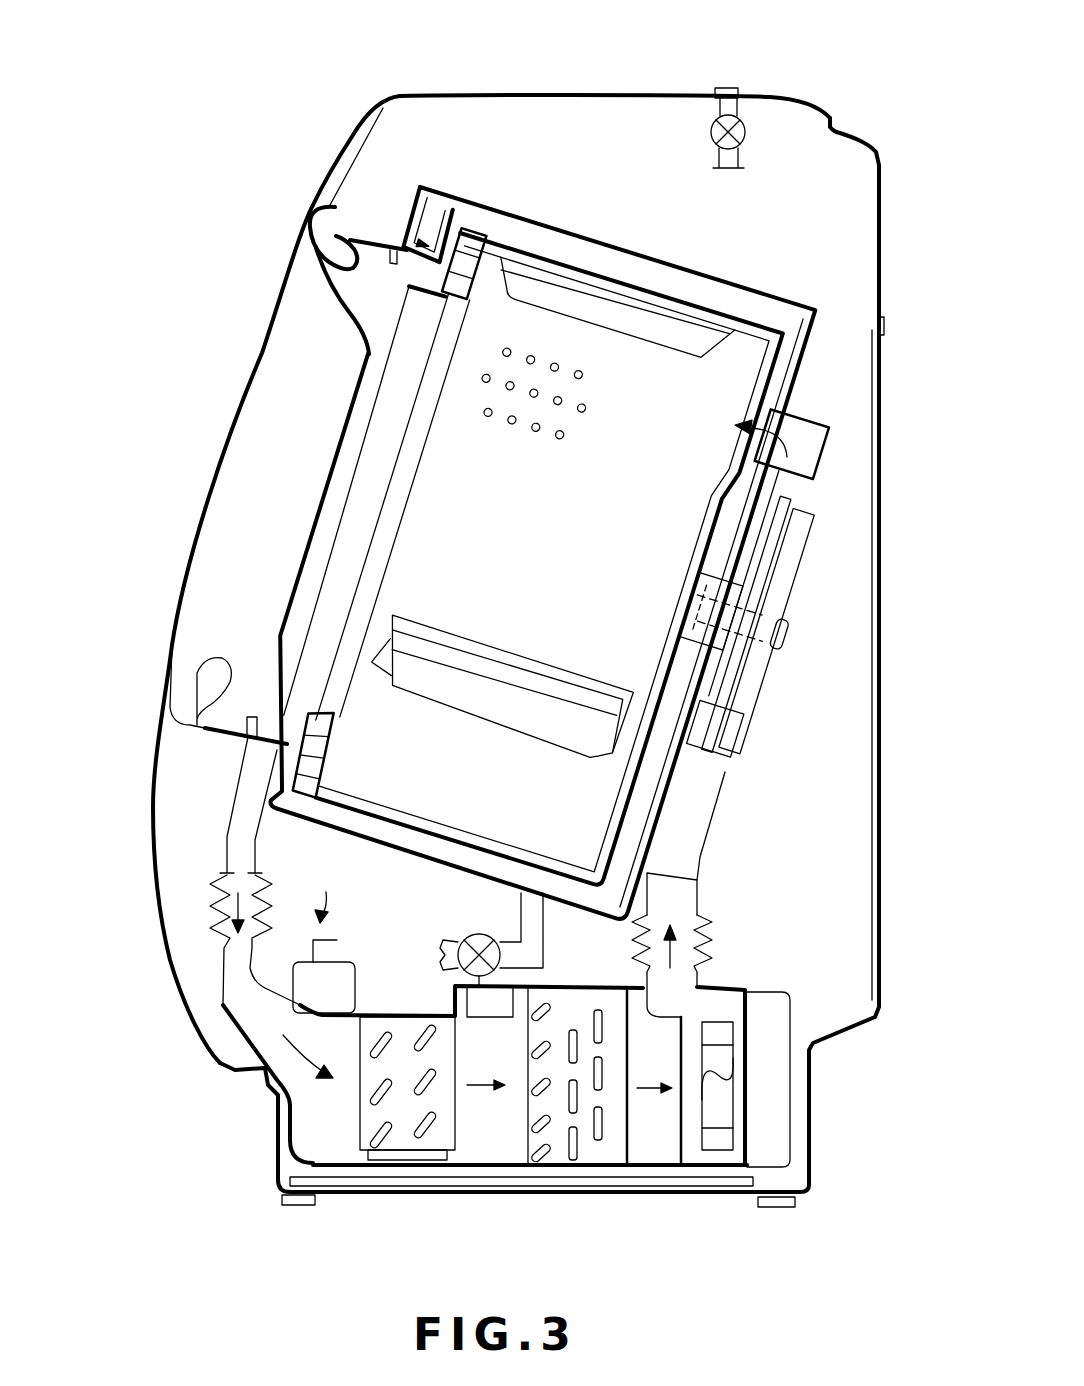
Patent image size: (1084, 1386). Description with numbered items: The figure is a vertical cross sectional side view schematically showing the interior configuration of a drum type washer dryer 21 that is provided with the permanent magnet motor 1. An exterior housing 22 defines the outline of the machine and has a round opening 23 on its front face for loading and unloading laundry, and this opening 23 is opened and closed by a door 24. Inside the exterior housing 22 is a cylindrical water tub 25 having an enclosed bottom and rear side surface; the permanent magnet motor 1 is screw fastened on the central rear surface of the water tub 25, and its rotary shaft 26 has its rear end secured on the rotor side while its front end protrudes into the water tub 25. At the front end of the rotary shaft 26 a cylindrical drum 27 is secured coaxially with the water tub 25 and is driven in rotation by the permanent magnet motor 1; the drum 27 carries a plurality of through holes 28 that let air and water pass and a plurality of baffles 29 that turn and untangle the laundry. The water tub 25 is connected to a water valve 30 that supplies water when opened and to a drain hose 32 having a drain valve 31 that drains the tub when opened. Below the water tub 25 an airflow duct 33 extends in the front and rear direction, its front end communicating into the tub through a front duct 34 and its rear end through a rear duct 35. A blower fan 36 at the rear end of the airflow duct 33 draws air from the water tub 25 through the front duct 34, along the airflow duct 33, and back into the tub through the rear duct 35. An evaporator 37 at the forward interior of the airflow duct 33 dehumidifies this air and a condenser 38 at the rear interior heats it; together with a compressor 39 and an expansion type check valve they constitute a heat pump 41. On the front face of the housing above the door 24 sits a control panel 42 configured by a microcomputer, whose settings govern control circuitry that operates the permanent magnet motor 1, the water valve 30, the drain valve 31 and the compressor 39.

The permanent magnet motor 1 is at (815, 522).
The drum type washer dryer 21 is at (545, 66).
The exterior housing 22 is at (153, 805).
The opening 23 is at (315, 248).
The door 24 is at (248, 392).
The water tub 25 is at (757, 287).
The rotary shaft 26 is at (717, 575).
The drum 27 is at (645, 290).
The through holes 28 is at (537, 440).
The baffles 29 is at (515, 735).
The water valve 30 is at (748, 130).
The drain valve 31 is at (478, 934).
The drain hose 32 is at (442, 940).
The airflow duct 33 is at (471, 1165).
The front duct 34 is at (235, 792).
The rear duct 35 is at (713, 815).
The blower fan 36 is at (790, 1107).
The evaporator 37 is at (401, 1140).
The condenser 38 is at (588, 1150).
The compressor 39 is at (357, 964).
The heat pump 41 is at (322, 892).
The control panel 42 is at (343, 137).